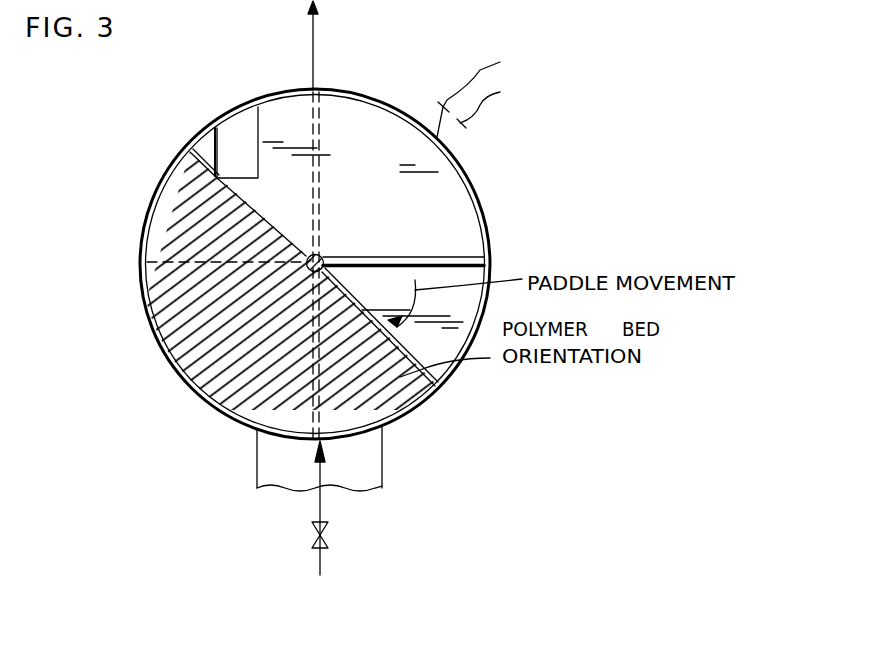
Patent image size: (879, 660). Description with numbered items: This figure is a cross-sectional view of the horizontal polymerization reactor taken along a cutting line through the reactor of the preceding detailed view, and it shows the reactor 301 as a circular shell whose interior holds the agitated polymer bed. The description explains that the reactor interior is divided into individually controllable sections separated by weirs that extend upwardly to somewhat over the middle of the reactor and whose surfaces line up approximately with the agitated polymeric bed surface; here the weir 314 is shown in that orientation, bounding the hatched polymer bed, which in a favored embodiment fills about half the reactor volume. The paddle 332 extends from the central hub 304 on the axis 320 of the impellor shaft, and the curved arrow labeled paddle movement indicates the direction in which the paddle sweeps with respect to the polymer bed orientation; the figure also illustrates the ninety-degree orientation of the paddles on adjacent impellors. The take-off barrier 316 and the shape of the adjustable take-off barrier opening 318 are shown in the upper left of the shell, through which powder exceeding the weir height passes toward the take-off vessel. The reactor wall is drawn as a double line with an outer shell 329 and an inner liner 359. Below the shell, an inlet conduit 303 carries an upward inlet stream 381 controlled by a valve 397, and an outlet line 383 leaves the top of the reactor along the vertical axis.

The reactor vessel 301 is at (445, 384).
The inlet conduit 303 is at (257, 460).
The paddle shaft hub 304 is at (322, 257).
The weir 314 is at (204, 160).
The take-off barrier 316 is at (443, 178).
The adjustable take-off barrier opening 318 is at (243, 130).
The central axis 320 is at (330, 118).
The outer vessel wall 329 is at (489, 95).
The paddle 332 is at (463, 257).
The inner wall liner 359 is at (496, 105).
The inlet flow line 381 is at (320, 477).
The outlet line 383 is at (313, 15).
The valve 397 is at (327, 532).